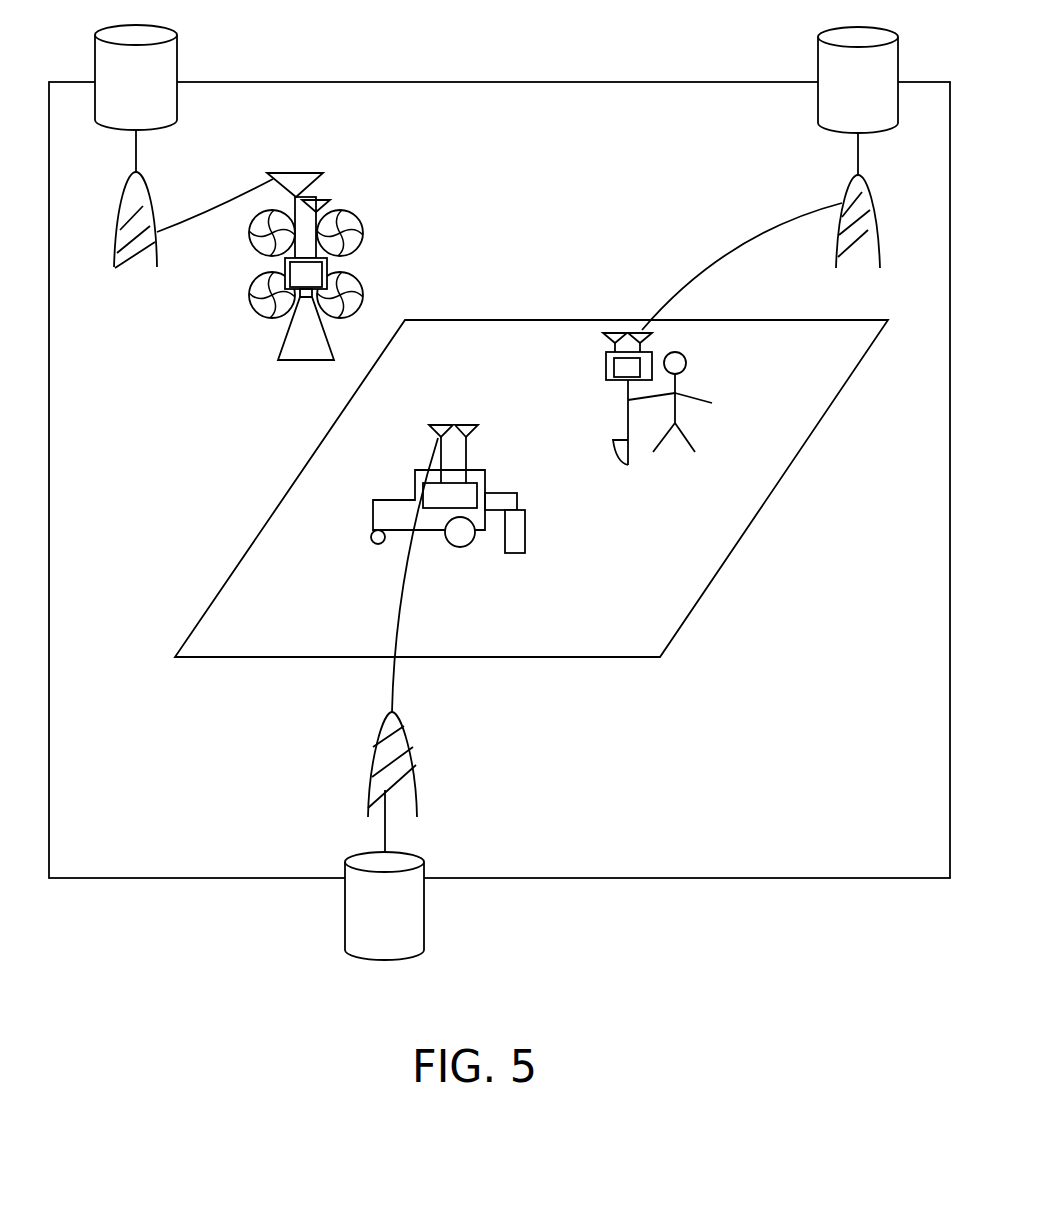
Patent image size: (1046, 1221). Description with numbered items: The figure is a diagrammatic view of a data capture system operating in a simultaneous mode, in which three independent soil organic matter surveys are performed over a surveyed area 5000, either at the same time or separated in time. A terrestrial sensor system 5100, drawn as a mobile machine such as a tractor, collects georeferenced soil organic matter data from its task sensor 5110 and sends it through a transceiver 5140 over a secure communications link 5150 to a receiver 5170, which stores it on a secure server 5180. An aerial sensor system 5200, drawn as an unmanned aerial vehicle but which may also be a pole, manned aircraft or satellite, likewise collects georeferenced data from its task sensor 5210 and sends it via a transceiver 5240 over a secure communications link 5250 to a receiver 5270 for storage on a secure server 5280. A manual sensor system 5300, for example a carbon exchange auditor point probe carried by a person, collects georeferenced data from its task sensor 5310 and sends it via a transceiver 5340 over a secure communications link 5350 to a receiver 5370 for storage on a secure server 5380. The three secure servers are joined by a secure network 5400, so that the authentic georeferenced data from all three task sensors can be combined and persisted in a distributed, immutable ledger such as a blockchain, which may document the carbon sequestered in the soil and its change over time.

The area / environment 5000 is at (325, 427).
The terrestrial sensor system 5100 is at (459, 476).
The task sensor 5110 is at (540, 531).
The transceiver 5140 is at (415, 466).
The secure communications link 5150 is at (418, 575).
The receiver 5170 is at (415, 782).
The secure server 5180 is at (384, 906).
The aerial sensor system 5200 is at (349, 252).
The task sensor 5210 is at (306, 328).
The transceiver 5240 is at (298, 178).
The secure communications link 5250 is at (215, 204).
The receiver 5270 is at (135, 221).
The secure server 5280 is at (136, 77).
The manual sensor system 5300 is at (657, 411).
The task sensor 5310 is at (632, 421).
The transceiver 5340 is at (645, 334).
The secure communications link 5350 is at (742, 266).
The receiver 5370 is at (831, 204).
The secure server 5380 is at (858, 80).
The secure network 5400 is at (499, 464).